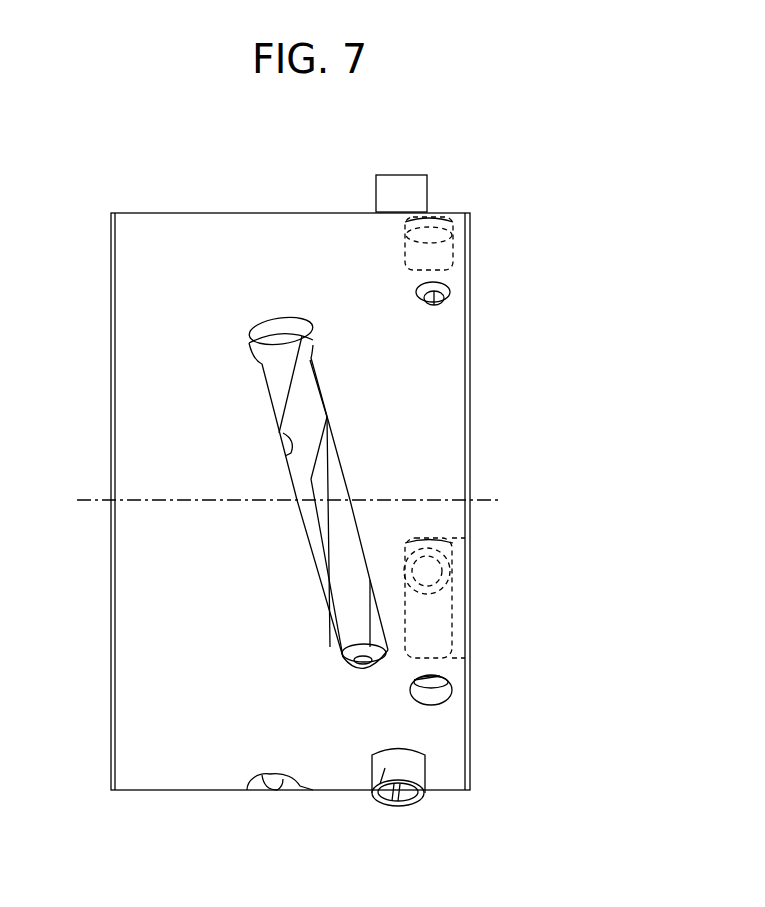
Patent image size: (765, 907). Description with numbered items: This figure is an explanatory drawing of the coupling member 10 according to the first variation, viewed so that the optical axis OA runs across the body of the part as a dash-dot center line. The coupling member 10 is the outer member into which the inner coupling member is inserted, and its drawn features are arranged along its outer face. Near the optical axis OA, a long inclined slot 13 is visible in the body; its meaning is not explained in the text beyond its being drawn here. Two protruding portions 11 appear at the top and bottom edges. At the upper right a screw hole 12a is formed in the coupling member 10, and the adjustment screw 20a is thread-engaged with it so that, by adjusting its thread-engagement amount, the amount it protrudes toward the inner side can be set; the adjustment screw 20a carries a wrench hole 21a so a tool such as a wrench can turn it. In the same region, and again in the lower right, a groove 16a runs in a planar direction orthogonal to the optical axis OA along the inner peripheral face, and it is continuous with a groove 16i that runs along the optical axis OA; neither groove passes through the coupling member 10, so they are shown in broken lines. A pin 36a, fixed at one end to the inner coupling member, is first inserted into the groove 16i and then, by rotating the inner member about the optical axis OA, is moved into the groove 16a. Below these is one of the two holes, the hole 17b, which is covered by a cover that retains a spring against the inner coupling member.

The coupling member 10 is at (184, 230).
The cylindrical boss 11 is at (395, 188).
The screw hole 12a is at (425, 287).
The guide slot 13 is at (280, 433).
The groove 16a is at (472, 231).
The groove 16i is at (472, 258).
The hole 17b is at (440, 694).
The adjustment screw 20a is at (446, 292).
The wrench hole 21a is at (434, 302).
The pin 36a is at (420, 250).
The optical axis OA is at (84, 502).